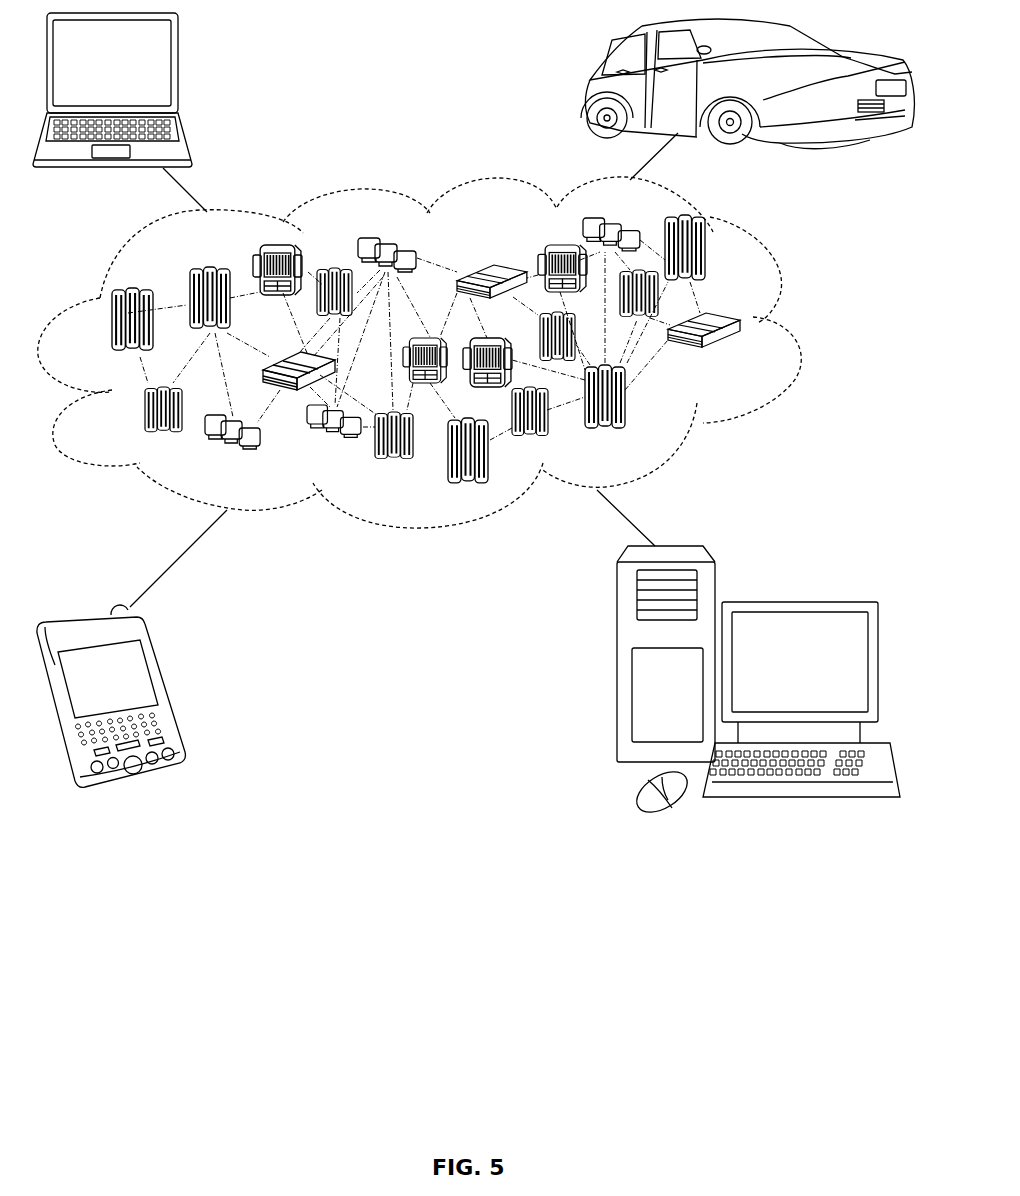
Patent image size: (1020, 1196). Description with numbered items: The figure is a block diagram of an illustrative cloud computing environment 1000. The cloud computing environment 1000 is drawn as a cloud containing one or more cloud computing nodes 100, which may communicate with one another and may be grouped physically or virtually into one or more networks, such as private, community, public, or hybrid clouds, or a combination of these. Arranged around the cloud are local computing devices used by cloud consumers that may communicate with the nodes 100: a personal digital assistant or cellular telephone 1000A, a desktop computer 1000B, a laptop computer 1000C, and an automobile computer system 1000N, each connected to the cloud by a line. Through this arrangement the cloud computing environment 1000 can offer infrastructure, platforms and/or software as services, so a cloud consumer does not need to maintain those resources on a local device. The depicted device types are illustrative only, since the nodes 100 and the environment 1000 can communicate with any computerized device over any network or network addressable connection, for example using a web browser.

The cloud computing nodes 100 is at (742, 357).
The cloud computing environment 1000 is at (797, 330).
The personal digital assistant (PDA) or cellular telephone 1000A is at (170, 688).
The desktop computer 1000B is at (797, 598).
The laptop computer 1000C is at (180, 72).
The automobile computer system 1000N is at (590, 88).